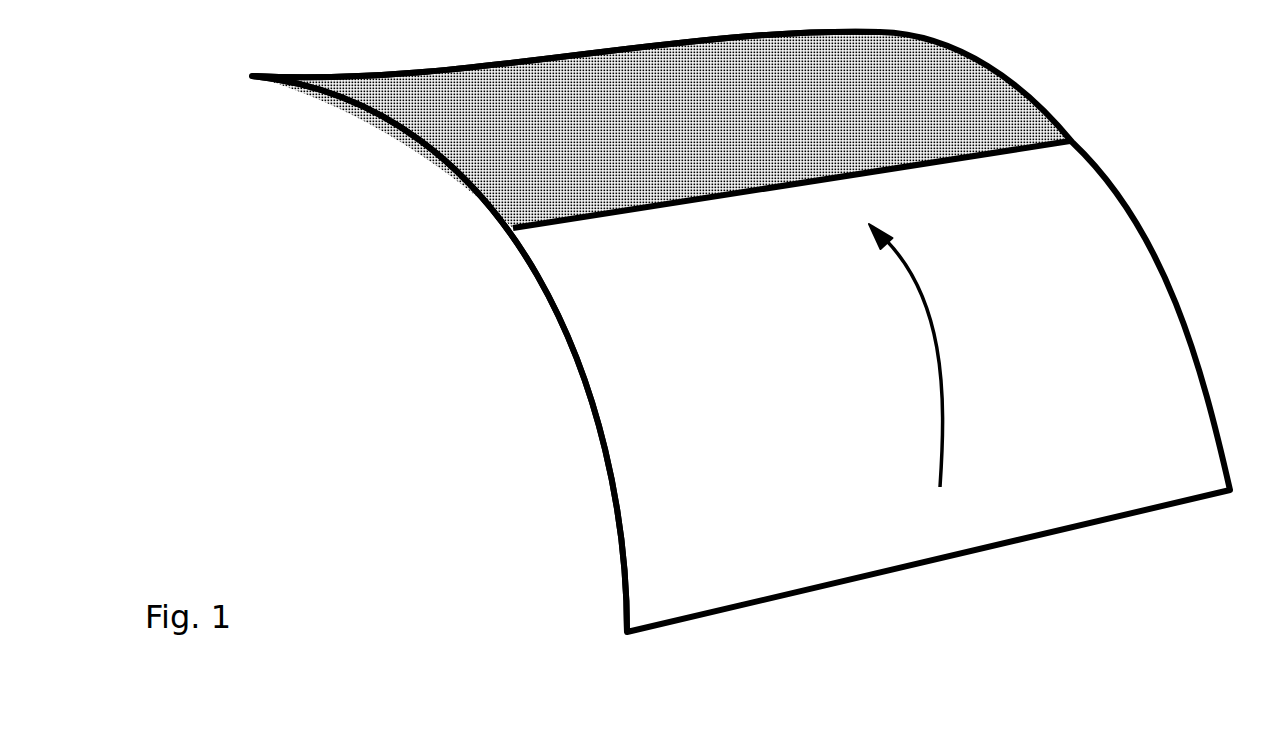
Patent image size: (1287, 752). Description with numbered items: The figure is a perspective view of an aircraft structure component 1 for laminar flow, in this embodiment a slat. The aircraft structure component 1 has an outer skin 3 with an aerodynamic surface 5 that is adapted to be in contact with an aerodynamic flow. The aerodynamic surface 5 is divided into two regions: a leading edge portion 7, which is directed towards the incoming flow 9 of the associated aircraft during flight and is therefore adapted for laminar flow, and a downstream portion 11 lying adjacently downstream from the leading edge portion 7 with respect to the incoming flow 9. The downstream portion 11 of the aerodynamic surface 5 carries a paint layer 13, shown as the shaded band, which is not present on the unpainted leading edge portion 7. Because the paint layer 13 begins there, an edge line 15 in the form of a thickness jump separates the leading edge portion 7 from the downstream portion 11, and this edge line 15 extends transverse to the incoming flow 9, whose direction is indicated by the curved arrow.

The aircraft structure component 1 is at (408, 330).
The outer skin 3 is at (622, 456).
The aerodynamic surface 5 is at (616, 360).
The leading edge portion 7 is at (794, 334).
The incoming flow 9 is at (945, 452).
The downstream portion 11 is at (689, 134).
The paint layer 13 is at (510, 137).
The edge line 15 is at (980, 158).